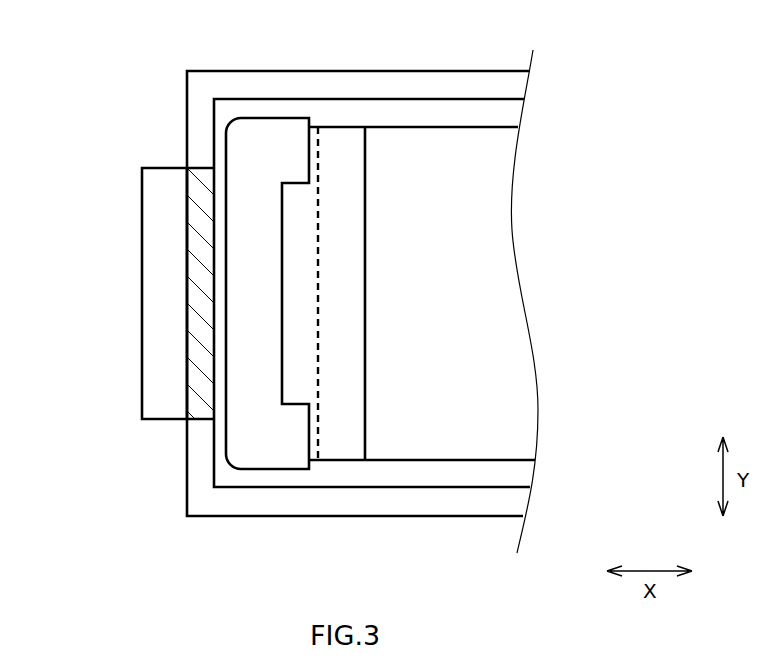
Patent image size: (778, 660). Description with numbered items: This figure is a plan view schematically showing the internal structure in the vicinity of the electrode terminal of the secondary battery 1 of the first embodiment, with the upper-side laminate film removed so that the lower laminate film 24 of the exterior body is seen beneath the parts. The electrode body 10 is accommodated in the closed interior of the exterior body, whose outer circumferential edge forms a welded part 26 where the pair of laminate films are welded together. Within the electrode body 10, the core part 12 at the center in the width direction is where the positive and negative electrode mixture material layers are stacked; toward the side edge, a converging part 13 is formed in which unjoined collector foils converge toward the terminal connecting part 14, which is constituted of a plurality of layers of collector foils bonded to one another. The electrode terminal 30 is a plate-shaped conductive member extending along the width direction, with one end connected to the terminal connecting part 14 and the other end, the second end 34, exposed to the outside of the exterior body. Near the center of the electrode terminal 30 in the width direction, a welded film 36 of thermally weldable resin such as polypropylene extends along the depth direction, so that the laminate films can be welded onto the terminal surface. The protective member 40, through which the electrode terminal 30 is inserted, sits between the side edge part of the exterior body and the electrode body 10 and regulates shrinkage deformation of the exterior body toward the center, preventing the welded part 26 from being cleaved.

The secondary battery 1 is at (56, 57).
The electrode body 10 is at (608, 177).
The core part 12 is at (470, 203).
The converging part 13 is at (362, 227).
The terminal connecting part 14 is at (307, 287).
The laminate film 24 is at (459, 115).
The welded part 26 is at (380, 79).
The electrode terminal 30 is at (221, 410).
The second end 34 is at (150, 218).
The welded film 36 is at (195, 300).
The protective member 40 is at (268, 132).